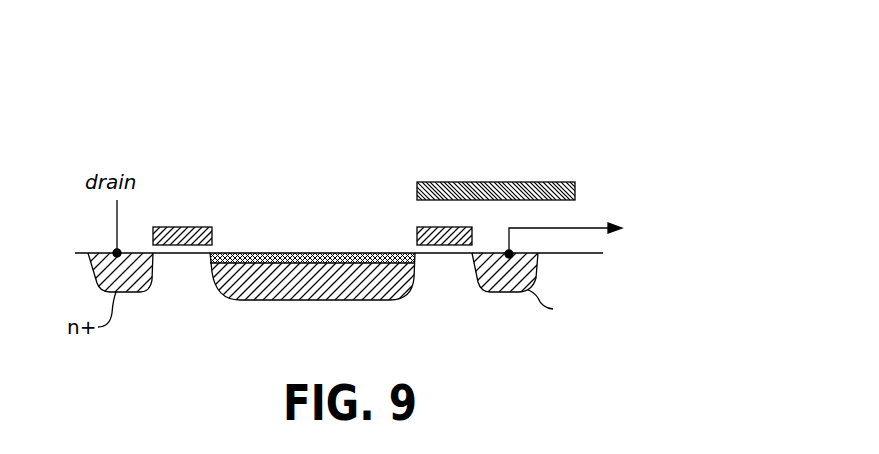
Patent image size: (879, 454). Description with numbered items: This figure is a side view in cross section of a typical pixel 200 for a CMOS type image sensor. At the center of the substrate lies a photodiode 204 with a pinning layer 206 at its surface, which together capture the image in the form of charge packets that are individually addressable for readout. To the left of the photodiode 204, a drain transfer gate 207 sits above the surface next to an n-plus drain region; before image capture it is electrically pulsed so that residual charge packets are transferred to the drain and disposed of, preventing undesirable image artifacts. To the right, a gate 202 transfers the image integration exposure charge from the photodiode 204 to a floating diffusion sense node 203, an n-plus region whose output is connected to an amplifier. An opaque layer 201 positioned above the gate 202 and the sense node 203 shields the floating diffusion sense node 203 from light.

The pixel 200 is at (348, 80).
The opaque layer 201 is at (463, 182).
The gate 202 is at (405, 227).
The floating diffusion sense node 203 is at (514, 293).
The photodiode 204 is at (316, 300).
The pinning layer 206 is at (272, 253).
The drain transfer gate 207 is at (187, 227).